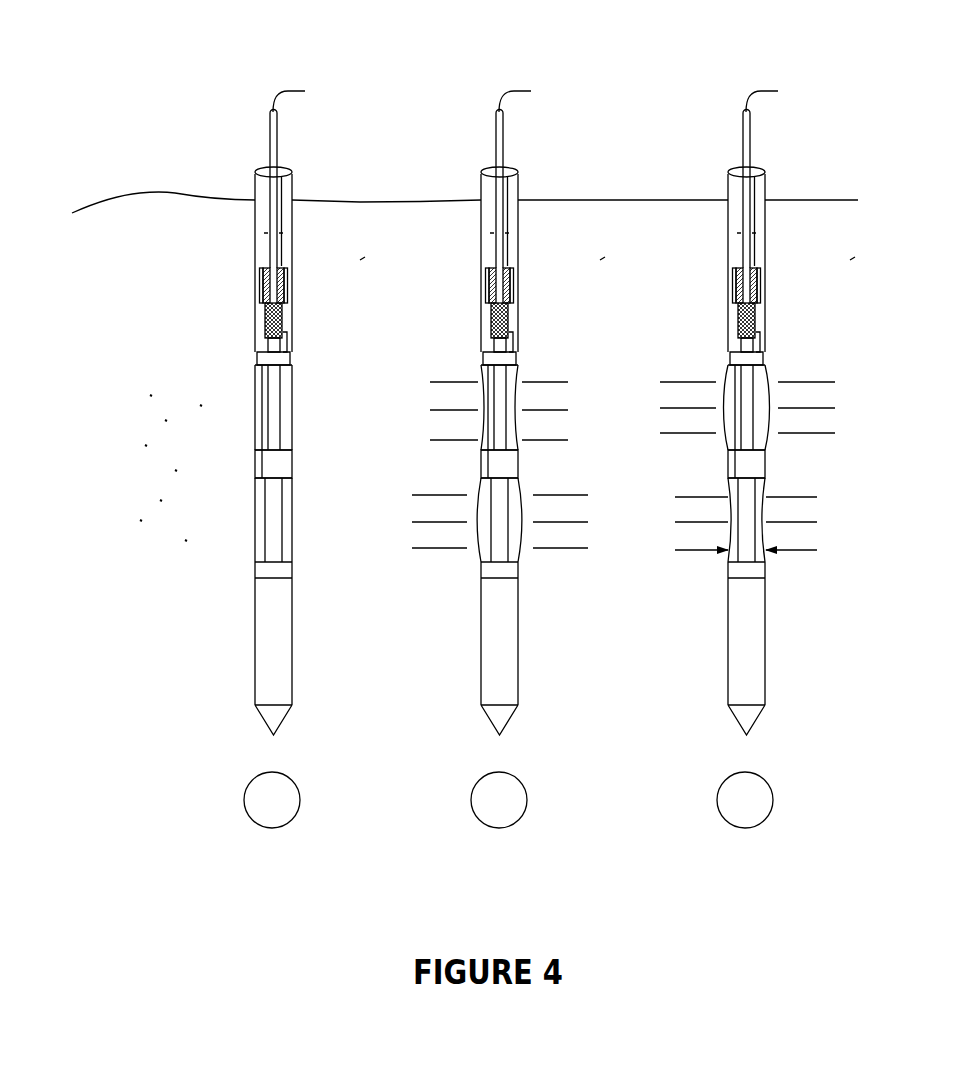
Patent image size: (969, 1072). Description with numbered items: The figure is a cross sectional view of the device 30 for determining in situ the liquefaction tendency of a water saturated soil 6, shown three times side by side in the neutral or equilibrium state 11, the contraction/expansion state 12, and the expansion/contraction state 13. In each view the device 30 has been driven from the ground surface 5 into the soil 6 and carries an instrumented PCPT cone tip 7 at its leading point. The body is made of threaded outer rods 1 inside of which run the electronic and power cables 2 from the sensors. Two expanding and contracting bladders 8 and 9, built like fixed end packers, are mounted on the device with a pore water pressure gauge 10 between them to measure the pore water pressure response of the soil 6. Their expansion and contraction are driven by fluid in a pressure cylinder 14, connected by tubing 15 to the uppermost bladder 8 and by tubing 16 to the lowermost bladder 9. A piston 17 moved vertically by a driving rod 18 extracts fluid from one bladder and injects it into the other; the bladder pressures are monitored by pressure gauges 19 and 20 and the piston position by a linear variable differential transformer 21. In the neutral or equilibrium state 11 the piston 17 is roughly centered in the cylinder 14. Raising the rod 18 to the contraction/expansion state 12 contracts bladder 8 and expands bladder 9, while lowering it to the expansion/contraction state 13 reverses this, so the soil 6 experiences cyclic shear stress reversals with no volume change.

The threaded outer rods 1 is at (535, 411).
The electronic and power cables 2 is at (512, 73).
The surface 5 is at (190, 124).
The water saturated soil 6 is at (155, 386).
The instrumented PCPT cone tip 7 is at (483, 728).
The uppermost bladder 8 is at (486, 397).
The lowermost bladder 9 is at (476, 520).
The pore water pressure gauge 10 is at (469, 464).
The neutral or equilibrium state 11 is at (272, 800).
The contraction/expansion state 12 is at (499, 800).
The expansion/contraction state 13 is at (745, 800).
The pressure cylinder 14 is at (473, 258).
The tubing 15 is at (546, 321).
The tubing 16 is at (466, 271).
The piston 17 is at (554, 274).
The driving rod 18 is at (267, 132).
The pressure gauge 19 is at (550, 258).
The pressure gauge 20 is at (474, 309).
The linear variable differential transformer 21 is at (555, 220).
The device 30 is at (625, 233).